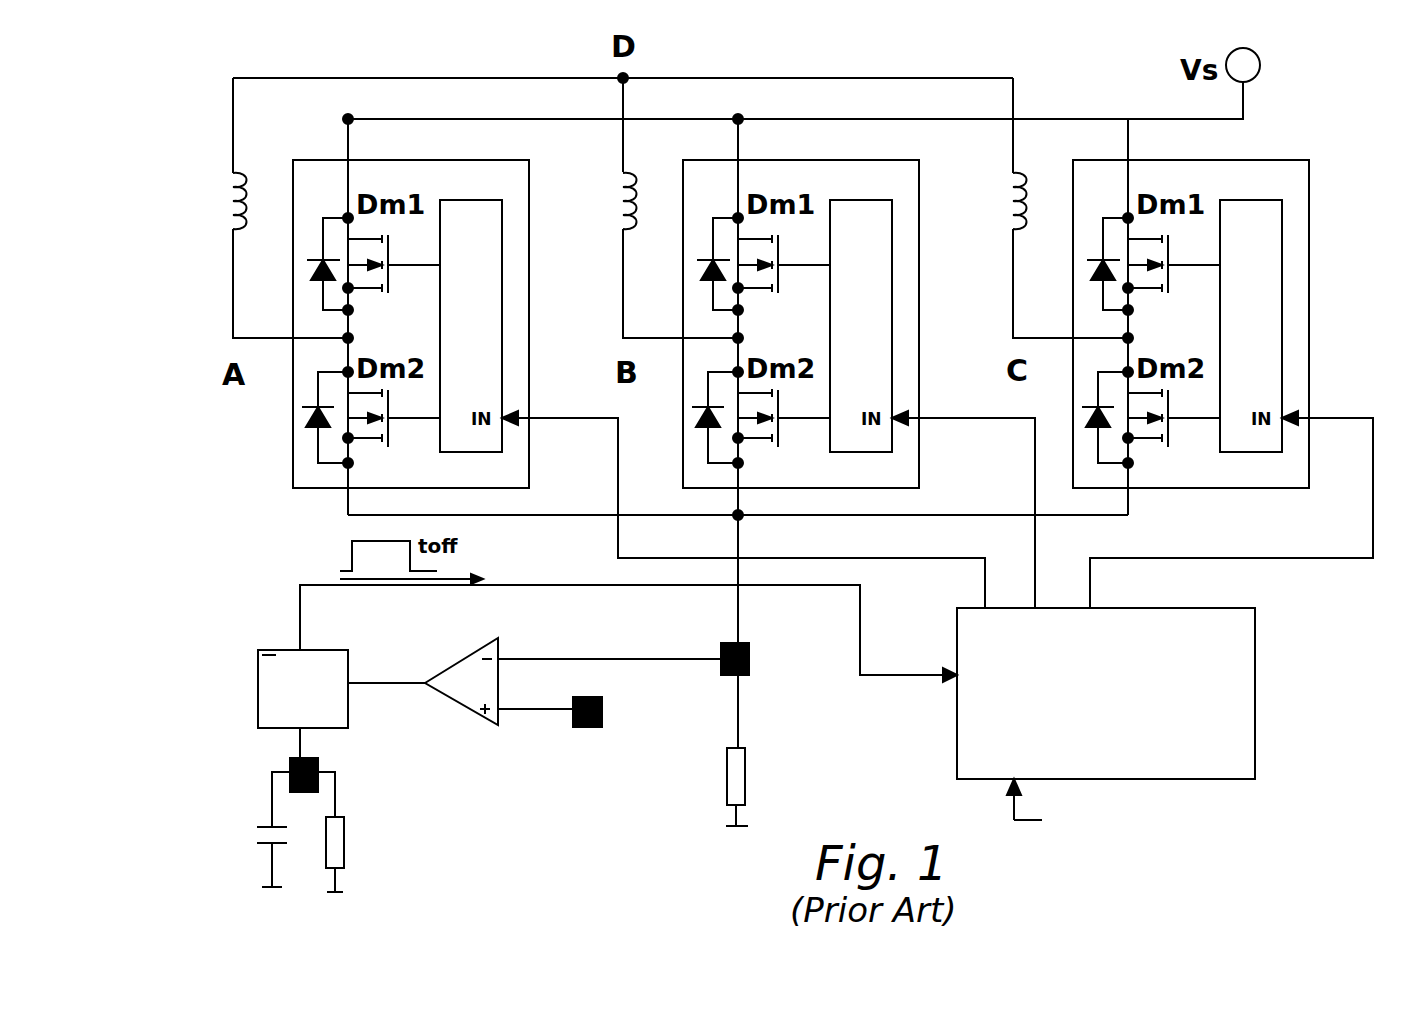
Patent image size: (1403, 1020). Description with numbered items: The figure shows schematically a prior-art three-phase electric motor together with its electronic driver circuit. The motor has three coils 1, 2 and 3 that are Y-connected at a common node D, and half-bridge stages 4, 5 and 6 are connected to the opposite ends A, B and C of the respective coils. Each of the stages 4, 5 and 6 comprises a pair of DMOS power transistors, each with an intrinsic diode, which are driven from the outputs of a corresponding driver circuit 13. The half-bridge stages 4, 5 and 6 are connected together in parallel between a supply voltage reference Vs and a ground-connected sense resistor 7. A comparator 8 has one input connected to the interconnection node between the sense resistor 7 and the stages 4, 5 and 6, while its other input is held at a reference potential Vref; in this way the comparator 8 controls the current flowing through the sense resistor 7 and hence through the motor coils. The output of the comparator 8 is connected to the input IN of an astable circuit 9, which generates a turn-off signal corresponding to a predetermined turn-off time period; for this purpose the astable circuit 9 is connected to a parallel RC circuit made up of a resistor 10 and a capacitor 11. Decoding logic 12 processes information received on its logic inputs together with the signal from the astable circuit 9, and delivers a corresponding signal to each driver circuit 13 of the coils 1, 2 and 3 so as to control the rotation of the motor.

The coil 1 is at (222, 190).
The coil 2 is at (612, 190).
The coil 3 is at (1002, 190).
The half-bridge stage 4 is at (523, 478).
The half-bridge stage 5 is at (913, 478).
The half-bridge stage 6 is at (1313, 478).
The sense resistor 7 is at (746, 788).
The comparator 8 is at (448, 670).
The astable circuit 9 is at (262, 655).
The resistor 10 is at (344, 855).
The capacitor 11 is at (255, 862).
The decoding logic 12 is at (1235, 707).
The driver circuit 13 is at (493, 345).